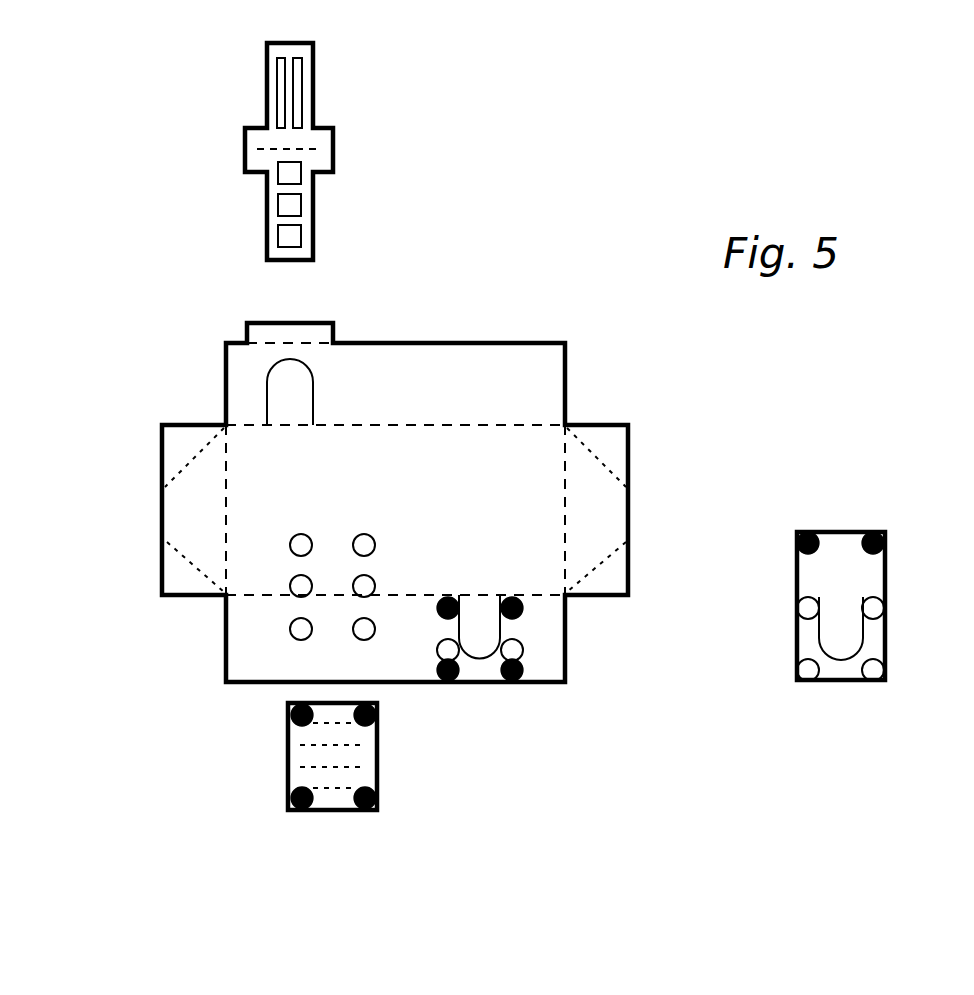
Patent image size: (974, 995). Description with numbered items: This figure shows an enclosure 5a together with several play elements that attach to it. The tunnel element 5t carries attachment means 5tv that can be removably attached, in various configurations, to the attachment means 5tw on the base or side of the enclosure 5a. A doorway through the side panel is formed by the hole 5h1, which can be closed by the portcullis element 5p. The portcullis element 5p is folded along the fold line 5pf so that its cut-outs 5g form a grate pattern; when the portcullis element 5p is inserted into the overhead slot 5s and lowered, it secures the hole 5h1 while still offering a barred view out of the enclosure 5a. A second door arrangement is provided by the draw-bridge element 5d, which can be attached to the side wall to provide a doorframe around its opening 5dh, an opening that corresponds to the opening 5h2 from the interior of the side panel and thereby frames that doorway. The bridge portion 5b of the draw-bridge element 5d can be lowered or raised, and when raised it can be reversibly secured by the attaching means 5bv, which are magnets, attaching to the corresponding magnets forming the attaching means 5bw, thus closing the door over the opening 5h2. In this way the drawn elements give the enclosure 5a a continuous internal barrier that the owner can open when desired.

The enclosure 5a is at (404, 502).
The bridge portion 5b is at (860, 563).
The attaching means 5bv is at (797, 548).
The attaching means 5bw is at (512, 648).
The draw-bridge element 5d is at (841, 570).
The opening 5dh is at (843, 623).
The cut-outs 5g is at (274, 95).
The hole 5h1 is at (287, 410).
The opening 5h2 is at (487, 610).
The portcullis element 5p is at (333, 151).
The fold line 5pf is at (318, 152).
The overhead slot 5s is at (293, 342).
The tunnel element 5t is at (363, 756).
The attachment means 5tv is at (288, 722).
The attachment means 5tw is at (292, 553).